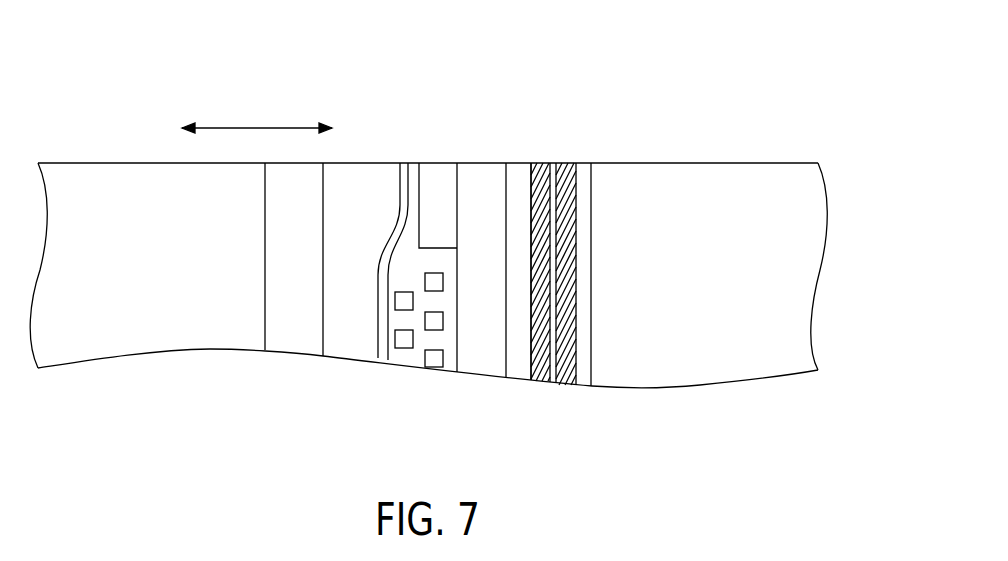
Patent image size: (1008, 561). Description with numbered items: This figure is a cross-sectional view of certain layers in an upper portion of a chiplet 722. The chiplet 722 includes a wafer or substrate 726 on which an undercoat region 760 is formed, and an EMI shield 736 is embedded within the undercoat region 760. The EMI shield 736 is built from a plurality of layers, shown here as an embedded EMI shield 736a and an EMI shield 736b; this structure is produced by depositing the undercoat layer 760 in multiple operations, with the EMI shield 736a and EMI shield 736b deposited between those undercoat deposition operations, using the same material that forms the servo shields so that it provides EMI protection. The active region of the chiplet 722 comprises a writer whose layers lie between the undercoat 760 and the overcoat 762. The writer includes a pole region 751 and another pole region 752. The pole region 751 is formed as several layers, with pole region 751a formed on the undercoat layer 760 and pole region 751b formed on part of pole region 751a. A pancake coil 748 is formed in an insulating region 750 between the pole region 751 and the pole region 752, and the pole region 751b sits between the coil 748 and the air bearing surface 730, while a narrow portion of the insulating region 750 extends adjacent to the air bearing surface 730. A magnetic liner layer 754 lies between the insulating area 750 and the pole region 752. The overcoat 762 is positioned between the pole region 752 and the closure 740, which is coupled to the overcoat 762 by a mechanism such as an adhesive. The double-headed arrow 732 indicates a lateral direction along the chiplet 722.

The chiplet 722 is at (813, 295).
The substrate 726 is at (717, 274).
The air bearing surface 730 is at (432, 163).
The lateral direction 732 is at (256, 123).
The EMI shield 736 is at (646, 330).
The EMI shield 736a is at (567, 385).
The EMI shield 736b is at (542, 385).
The closure 740 is at (175, 272).
The pancake coil 748 is at (434, 362).
The insulating region 750 is at (413, 357).
The pole region 751 is at (564, 190).
The pole region 751a is at (483, 177).
The pole region 751b is at (443, 177).
The pole region 752 is at (382, 227).
The magnetic liner layer 754 is at (386, 352).
The undercoat region 760 is at (583, 172).
The overcoat 762 is at (315, 272).